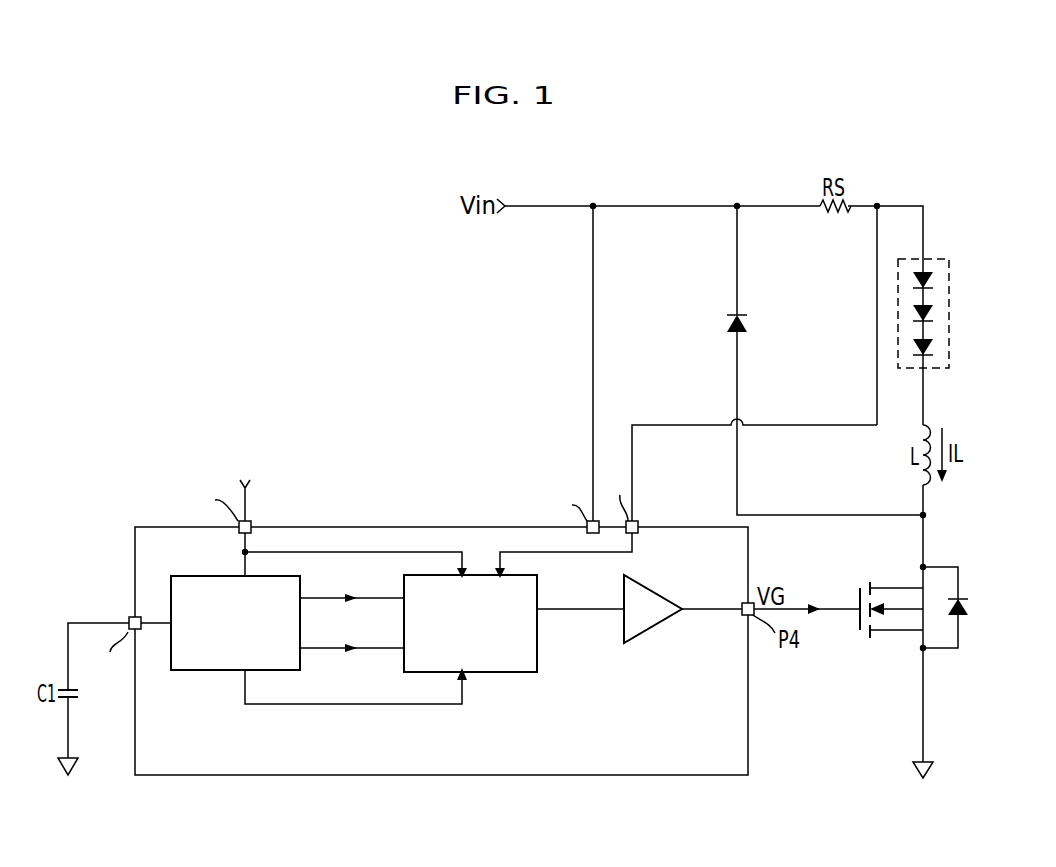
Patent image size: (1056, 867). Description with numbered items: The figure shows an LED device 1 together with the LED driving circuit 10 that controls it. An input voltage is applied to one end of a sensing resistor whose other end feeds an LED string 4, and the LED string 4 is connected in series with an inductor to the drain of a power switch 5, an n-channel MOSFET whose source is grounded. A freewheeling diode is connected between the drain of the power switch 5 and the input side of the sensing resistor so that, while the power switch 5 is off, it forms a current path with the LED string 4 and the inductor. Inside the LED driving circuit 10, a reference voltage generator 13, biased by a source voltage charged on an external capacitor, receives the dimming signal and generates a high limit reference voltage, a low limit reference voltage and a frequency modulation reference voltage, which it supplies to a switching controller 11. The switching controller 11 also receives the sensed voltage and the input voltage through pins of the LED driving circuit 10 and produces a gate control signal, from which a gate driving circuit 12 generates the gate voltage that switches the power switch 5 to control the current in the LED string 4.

The LED device 1 is at (905, 189).
The LED string 4 is at (950, 313).
The power switch 5 is at (865, 583).
The LED driving circuit 10 is at (422, 527).
The switching controller 11 is at (540, 650).
The gate driving circuit 12 is at (655, 588).
The reference voltage generator 13 is at (222, 672).